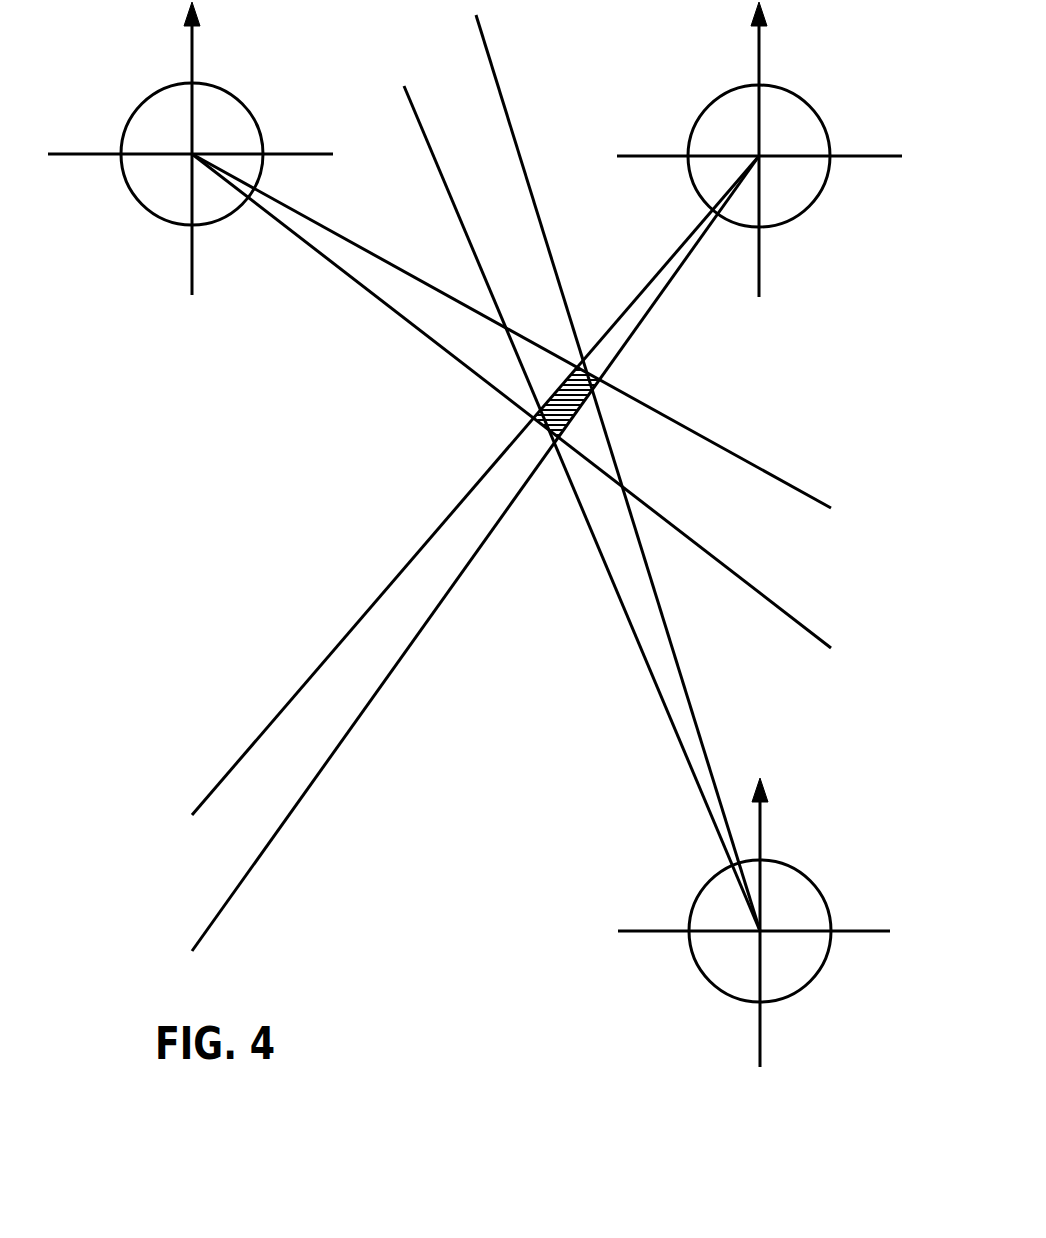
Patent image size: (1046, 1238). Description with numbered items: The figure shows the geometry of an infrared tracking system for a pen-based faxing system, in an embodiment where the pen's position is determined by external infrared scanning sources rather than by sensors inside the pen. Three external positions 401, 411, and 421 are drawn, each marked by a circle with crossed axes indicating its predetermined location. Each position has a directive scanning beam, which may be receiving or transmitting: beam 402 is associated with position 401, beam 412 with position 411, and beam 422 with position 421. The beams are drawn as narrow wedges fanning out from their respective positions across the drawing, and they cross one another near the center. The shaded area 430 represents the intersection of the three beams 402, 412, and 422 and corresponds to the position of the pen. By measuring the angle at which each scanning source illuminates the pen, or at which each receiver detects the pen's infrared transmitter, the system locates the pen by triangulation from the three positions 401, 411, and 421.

The external position 401 is at (140, 202).
The directive scanning beam 402 is at (370, 295).
The external position 411 is at (800, 98).
The directive scanning beam 412 is at (640, 322).
The external position 421 is at (812, 880).
The directive scanning beam 422 is at (683, 685).
The shaded area 430 is at (580, 360).